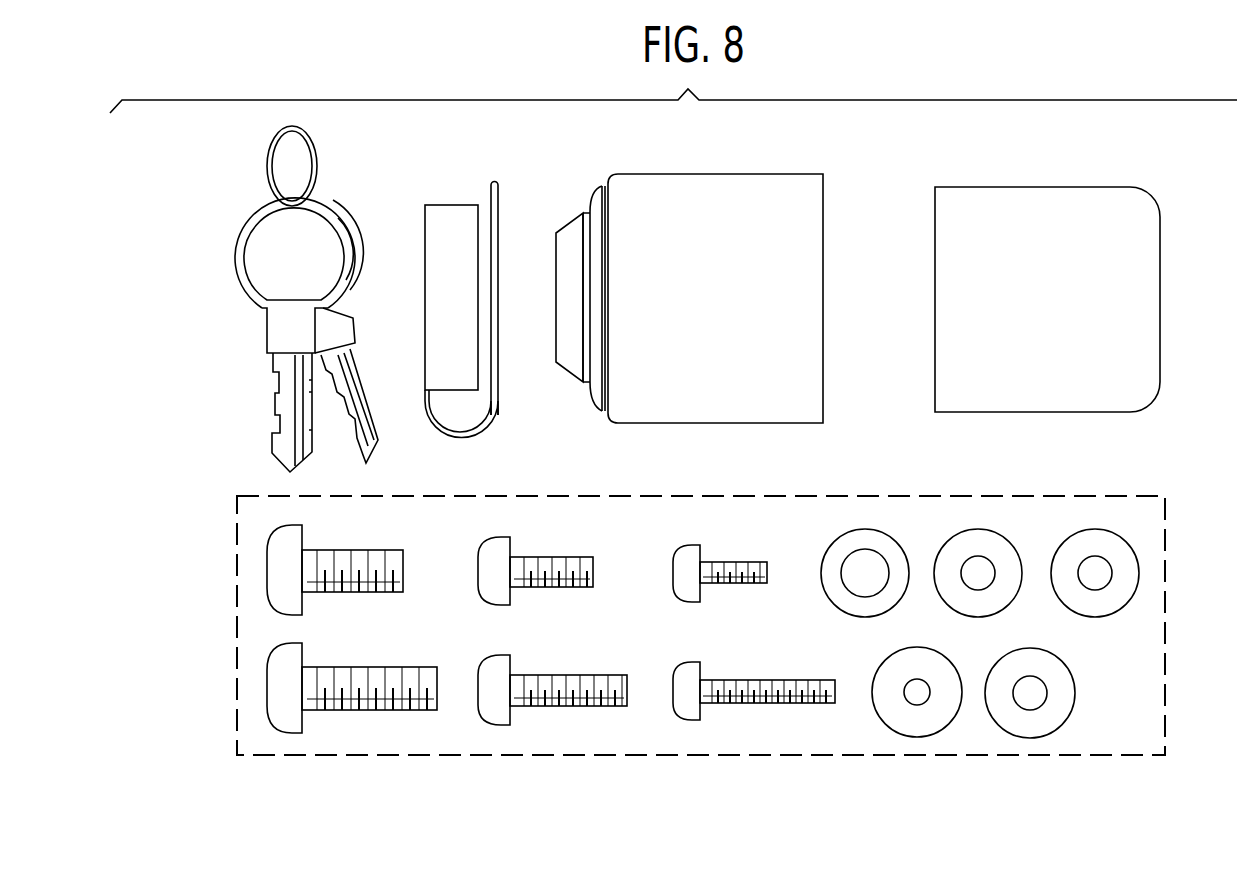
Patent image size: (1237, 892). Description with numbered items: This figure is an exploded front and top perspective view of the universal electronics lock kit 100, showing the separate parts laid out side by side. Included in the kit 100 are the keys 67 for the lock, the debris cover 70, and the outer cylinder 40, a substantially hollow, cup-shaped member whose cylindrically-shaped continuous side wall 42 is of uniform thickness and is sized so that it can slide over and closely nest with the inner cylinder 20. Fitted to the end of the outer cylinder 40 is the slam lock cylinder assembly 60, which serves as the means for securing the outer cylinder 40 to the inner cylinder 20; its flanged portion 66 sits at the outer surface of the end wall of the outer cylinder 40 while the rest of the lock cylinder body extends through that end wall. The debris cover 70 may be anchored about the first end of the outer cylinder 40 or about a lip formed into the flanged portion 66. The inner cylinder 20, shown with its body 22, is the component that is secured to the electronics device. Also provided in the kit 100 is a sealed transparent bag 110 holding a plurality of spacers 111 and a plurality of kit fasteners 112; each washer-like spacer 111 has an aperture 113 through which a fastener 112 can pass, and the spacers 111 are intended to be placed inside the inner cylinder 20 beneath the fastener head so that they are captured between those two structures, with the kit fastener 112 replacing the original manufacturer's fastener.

The kit 100 is at (1035, 65).
The keys 67 is at (236, 262).
The debris cover 70 is at (452, 205).
The outer cylinder 40 is at (628, 148).
The side wall 42 is at (760, 174).
The lock cylinder assembly 60 is at (573, 408).
The flanged portion 66 is at (573, 363).
The inner cylinder 20 is at (1178, 190).
The plate body 22 is at (1047, 187).
The sealed transparent bag 110 is at (1046, 496).
The kit fastener 112 is at (392, 590).
The spacers 111 is at (948, 542).
The aperture 113 is at (1085, 573).